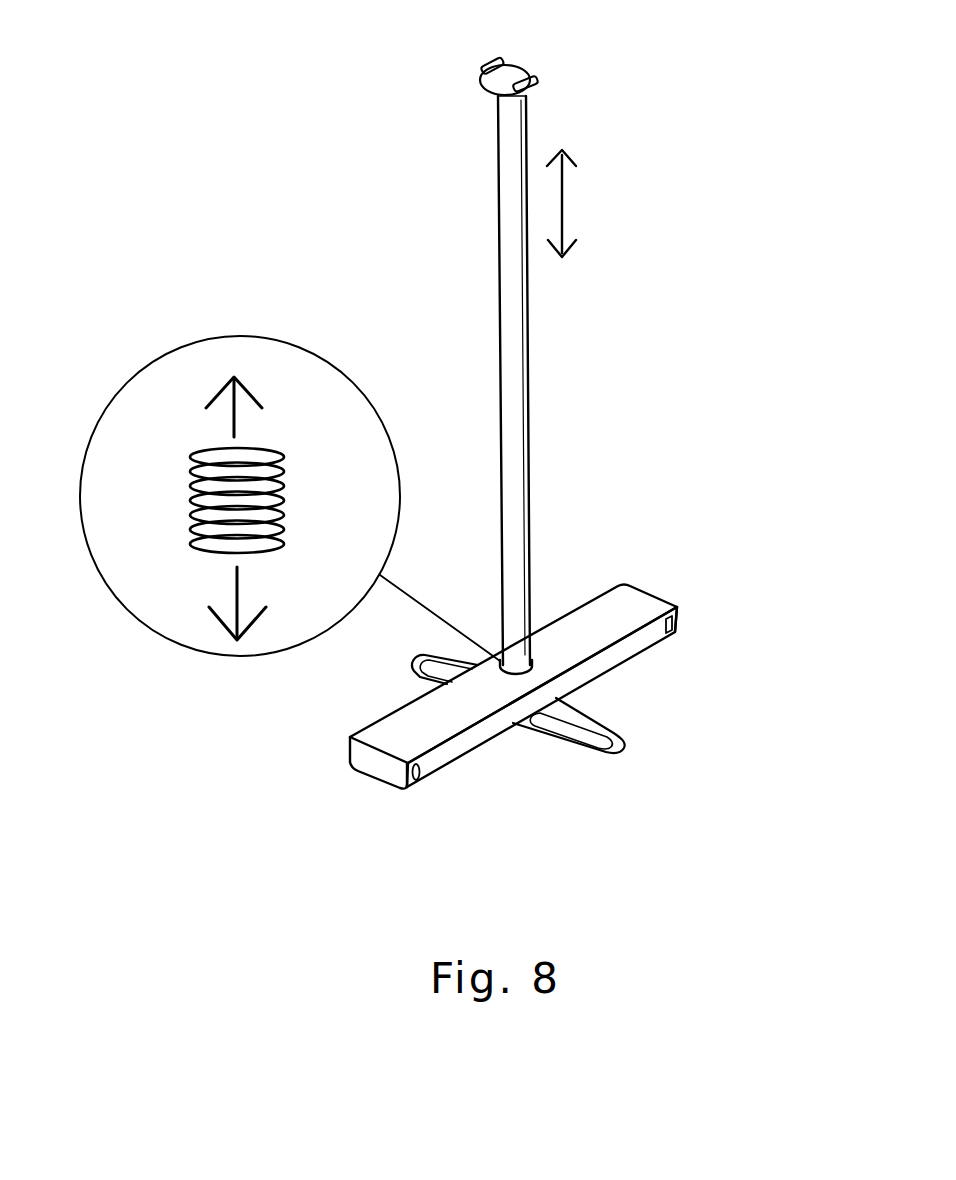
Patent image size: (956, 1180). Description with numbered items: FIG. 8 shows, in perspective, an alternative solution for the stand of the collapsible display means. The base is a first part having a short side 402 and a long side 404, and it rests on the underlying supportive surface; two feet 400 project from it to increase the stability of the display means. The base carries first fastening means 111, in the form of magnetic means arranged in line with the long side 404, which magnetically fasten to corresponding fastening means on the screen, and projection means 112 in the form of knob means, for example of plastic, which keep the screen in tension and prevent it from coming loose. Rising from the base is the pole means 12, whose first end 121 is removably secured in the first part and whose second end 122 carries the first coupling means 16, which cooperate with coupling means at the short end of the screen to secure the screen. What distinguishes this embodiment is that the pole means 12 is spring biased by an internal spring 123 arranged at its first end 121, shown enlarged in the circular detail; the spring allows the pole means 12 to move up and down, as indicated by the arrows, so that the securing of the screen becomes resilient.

The pole means 12 is at (528, 383).
The first coupling means 16 is at (487, 72).
The second end 122 is at (494, 98).
The first end 121 is at (534, 673).
The internal spring 123 is at (286, 497).
The long side 404 is at (478, 733).
The short side 402 is at (357, 752).
The feet 400 is at (413, 665).
The first fastening means 111 is at (420, 783).
The projection means 112 is at (400, 770).